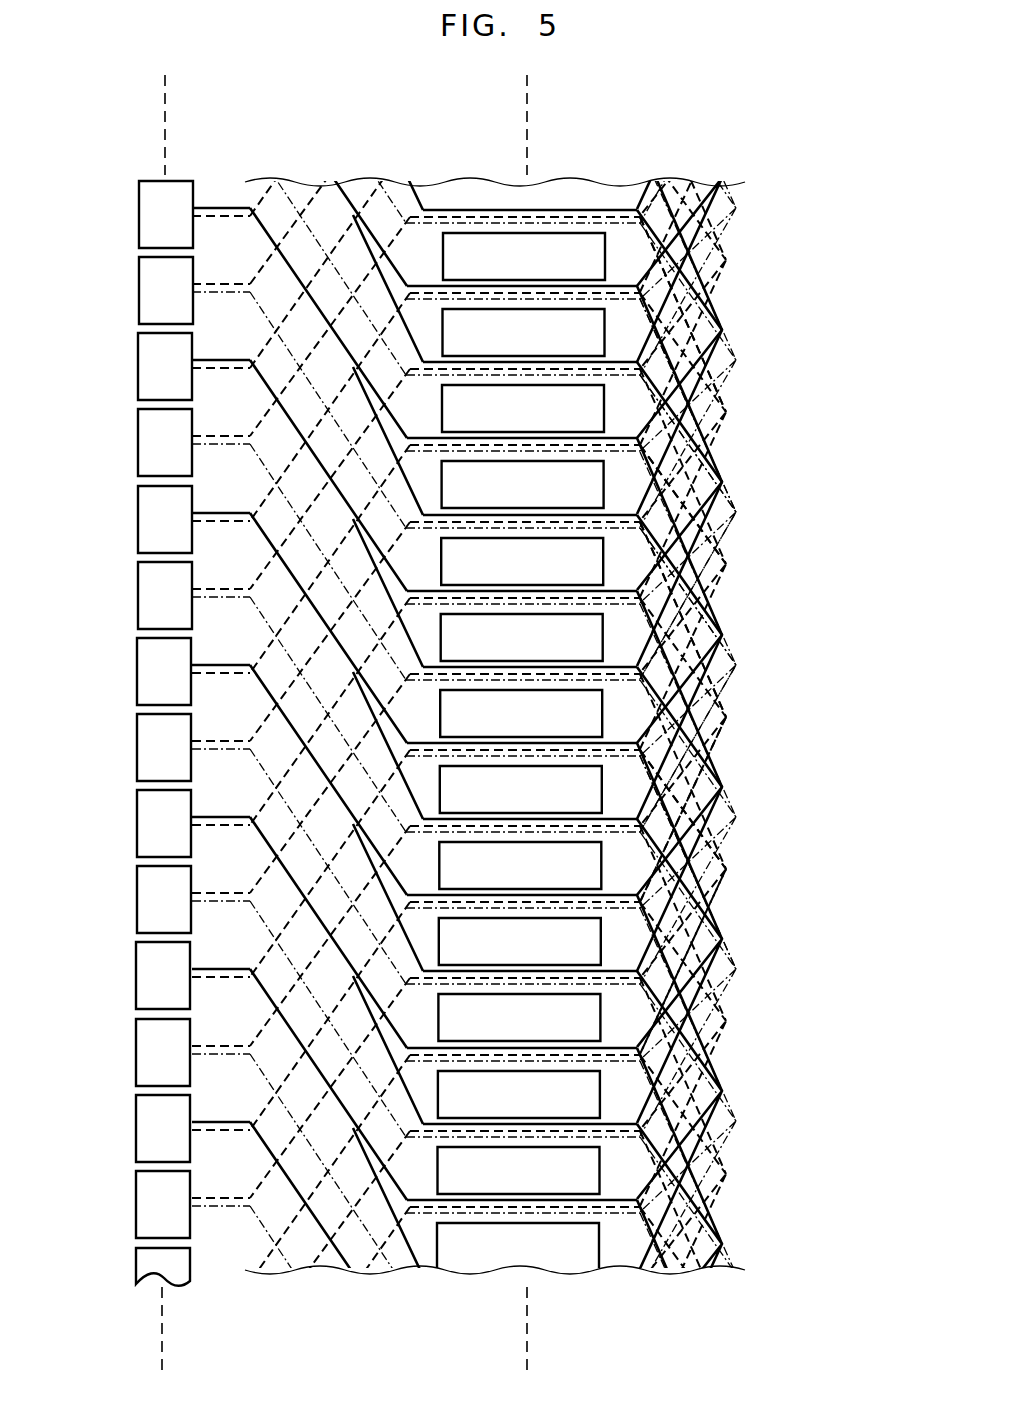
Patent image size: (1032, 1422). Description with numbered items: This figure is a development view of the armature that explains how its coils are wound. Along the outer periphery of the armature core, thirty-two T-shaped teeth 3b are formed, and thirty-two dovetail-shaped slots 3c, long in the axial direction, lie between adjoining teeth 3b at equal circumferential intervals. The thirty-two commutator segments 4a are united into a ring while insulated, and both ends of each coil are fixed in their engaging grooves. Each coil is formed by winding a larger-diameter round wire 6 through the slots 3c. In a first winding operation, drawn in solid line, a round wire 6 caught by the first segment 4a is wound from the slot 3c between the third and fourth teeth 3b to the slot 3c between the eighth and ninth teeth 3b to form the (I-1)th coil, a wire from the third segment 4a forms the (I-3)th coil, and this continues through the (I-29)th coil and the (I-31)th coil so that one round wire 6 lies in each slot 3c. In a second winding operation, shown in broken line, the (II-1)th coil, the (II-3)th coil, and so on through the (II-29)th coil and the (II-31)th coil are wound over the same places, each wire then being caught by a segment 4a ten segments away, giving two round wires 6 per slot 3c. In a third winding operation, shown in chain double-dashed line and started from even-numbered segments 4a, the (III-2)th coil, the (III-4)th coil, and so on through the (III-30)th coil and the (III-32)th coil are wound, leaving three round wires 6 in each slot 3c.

The commutator segments 4a is at (140, 238).
The round wires 6 is at (305, 183).
The teeth 3b is at (468, 258).
The slots 3c is at (480, 381).
The coil I-29 is at (672, 373).
The coil II-29 is at (700, 412).
The coil III-30 is at (685, 474).
The coil I-31 is at (657, 590).
The coil III-32 is at (690, 594).
The coil II-31 is at (717, 630).
The coil I-1 is at (655, 645).
The coil II-1 is at (703, 700).
The coil III-2 is at (700, 757).
The coil I-3 is at (672, 818).
The coil II-3 is at (720, 943).
The coil III-4 is at (717, 985).